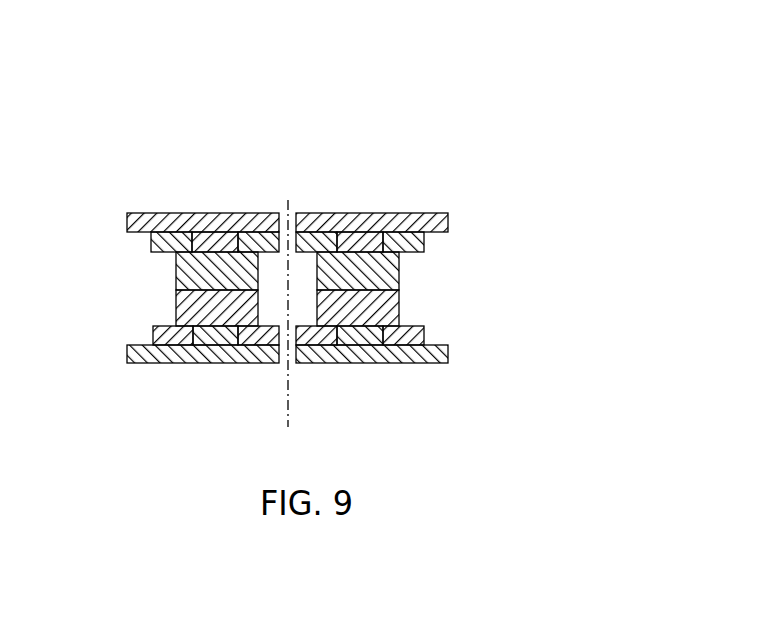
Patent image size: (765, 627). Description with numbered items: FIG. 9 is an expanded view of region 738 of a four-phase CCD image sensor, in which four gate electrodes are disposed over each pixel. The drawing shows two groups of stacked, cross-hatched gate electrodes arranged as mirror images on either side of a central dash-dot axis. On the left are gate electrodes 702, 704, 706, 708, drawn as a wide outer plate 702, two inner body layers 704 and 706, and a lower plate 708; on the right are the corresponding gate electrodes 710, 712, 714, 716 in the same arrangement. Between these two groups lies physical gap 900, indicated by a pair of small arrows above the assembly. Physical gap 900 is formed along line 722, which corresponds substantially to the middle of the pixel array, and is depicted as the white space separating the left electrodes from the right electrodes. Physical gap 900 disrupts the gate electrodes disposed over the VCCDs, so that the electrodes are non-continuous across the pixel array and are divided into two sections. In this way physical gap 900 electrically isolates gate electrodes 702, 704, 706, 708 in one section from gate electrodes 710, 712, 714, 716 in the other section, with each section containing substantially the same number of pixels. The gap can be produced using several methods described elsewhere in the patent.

The gate electrode 702 is at (127, 214).
The gate electrode 704 is at (176, 272).
The gate electrode 706 is at (176, 312).
The gate electrode 708 is at (127, 360).
The gate electrode 710 is at (450, 218).
The gate electrode 712 is at (400, 268).
The gate electrode 714 is at (400, 305).
The gate electrode 716 is at (448, 362).
The line 722 is at (288, 408).
The region 738 is at (453, 135).
The physical gap 900 is at (297, 184).